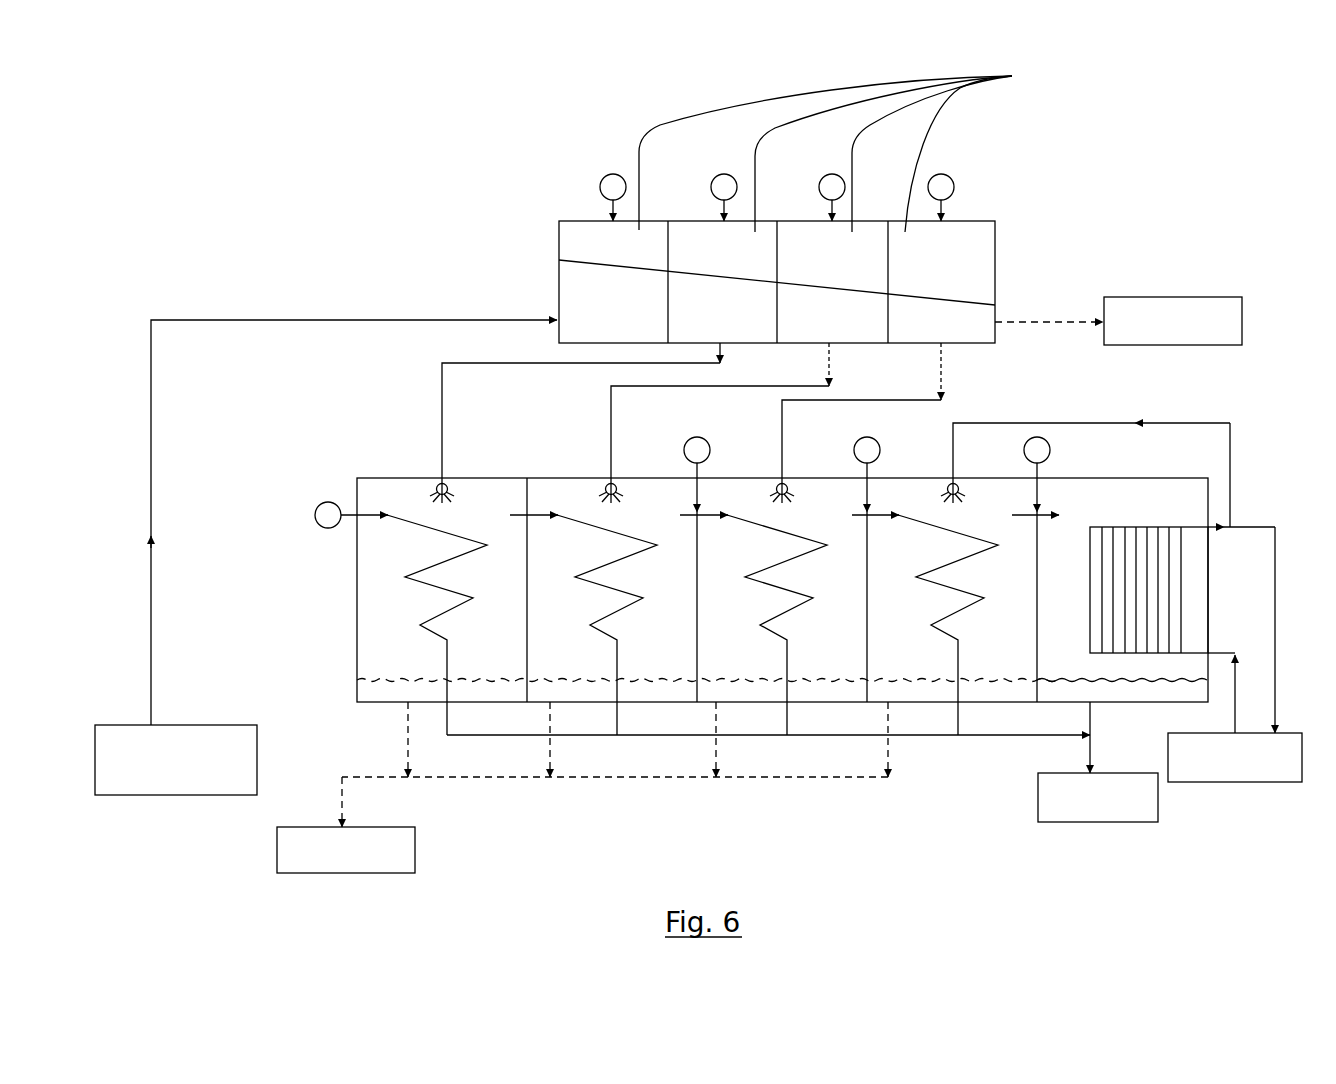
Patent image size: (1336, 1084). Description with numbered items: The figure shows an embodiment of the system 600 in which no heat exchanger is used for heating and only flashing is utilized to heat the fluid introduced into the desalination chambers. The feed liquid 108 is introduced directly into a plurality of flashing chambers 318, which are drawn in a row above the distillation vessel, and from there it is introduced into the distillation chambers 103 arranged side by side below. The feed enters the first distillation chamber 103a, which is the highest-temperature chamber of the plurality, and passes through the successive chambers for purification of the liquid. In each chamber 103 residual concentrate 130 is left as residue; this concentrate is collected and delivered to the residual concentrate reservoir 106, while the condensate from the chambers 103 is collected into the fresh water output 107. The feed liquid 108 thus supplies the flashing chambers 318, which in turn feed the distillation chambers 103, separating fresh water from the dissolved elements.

The multi-stage evaporation system 600 is at (718, 87).
The flashing chambers 318 is at (855, 150).
The residual concentrate 130 is at (571, 308).
The first distillation chamber 103a is at (407, 503).
The distillation chambers 103 is at (410, 657).
The residual concentrate reservoir 106 is at (759, 585).
The fresh water output 107 is at (1098, 797).
The feed liquid 108 is at (698, 760).